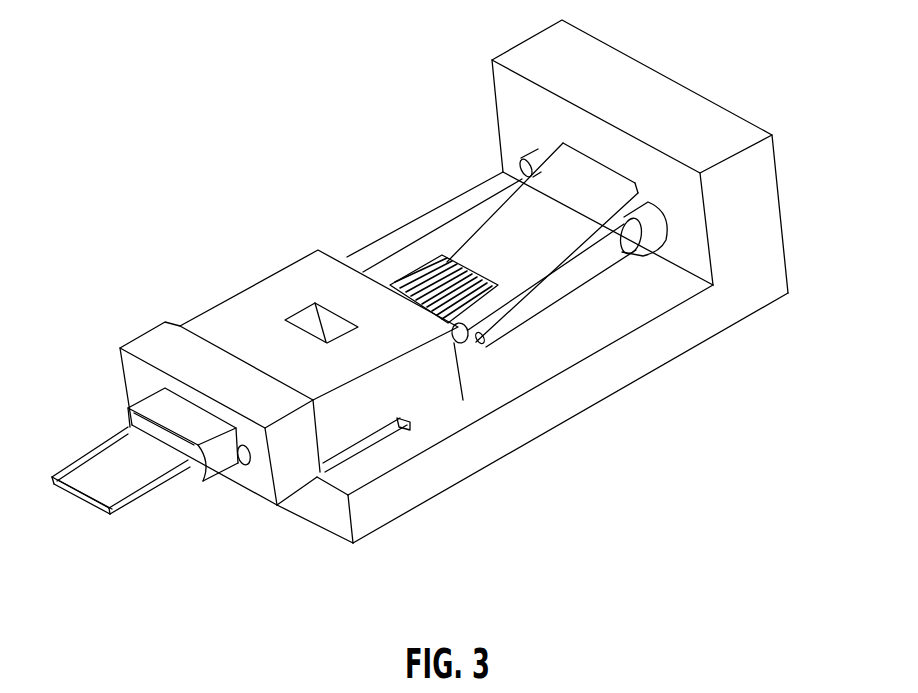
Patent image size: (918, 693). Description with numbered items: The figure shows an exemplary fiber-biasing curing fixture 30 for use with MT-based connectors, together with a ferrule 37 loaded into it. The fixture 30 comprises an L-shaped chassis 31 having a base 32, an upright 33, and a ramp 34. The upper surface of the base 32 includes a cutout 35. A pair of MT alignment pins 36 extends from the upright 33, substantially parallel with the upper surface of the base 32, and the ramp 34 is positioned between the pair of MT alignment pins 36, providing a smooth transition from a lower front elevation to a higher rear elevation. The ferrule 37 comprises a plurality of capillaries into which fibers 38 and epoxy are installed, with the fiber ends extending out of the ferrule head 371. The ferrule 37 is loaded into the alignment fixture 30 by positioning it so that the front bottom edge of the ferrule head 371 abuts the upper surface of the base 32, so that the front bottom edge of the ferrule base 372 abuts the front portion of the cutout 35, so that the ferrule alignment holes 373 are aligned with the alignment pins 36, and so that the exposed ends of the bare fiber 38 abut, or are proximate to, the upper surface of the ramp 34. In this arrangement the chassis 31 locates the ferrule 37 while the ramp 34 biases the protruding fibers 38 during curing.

The fixture 30 is at (369, 35).
The L-shaped chassis 31 is at (777, 25).
The base 32 is at (607, 378).
The upright 33 is at (657, 100).
The ramp 34 is at (527, 218).
The cutout 35 is at (377, 438).
The MT alignment pins 36 is at (577, 263).
The ferrule 37 is at (300, 240).
The fibers 38 is at (427, 263).
The ferrule head 371 is at (326, 367).
The ferrule base 372 is at (264, 402).
The ferrule alignment holes 373 is at (247, 466).